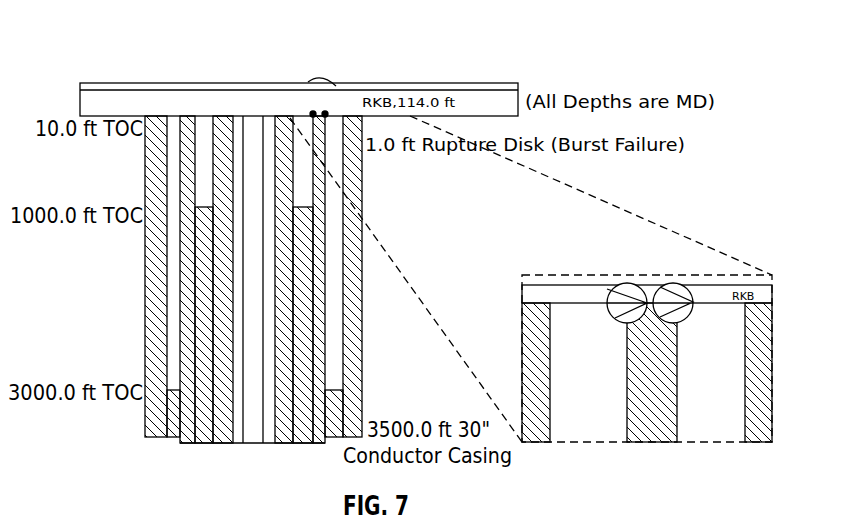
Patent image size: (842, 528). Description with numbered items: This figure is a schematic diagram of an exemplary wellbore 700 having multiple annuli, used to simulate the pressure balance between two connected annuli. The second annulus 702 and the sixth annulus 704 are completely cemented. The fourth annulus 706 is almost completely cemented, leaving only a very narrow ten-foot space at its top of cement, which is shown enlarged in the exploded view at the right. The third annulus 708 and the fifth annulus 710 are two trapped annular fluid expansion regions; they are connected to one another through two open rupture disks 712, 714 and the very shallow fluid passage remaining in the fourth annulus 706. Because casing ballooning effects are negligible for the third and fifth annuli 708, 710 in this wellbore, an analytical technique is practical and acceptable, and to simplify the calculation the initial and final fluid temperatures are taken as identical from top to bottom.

The well schematic 700 is at (183, 84).
The second annulus 702 is at (282, 128).
The sixth annulus 704 is at (355, 160).
The fourth annulus 706 is at (322, 116).
The third annulus 708 is at (303, 126).
The fifth annulus 710 is at (337, 120).
The rupture disk 712 is at (627, 293).
The rupture disk 714 is at (674, 290).